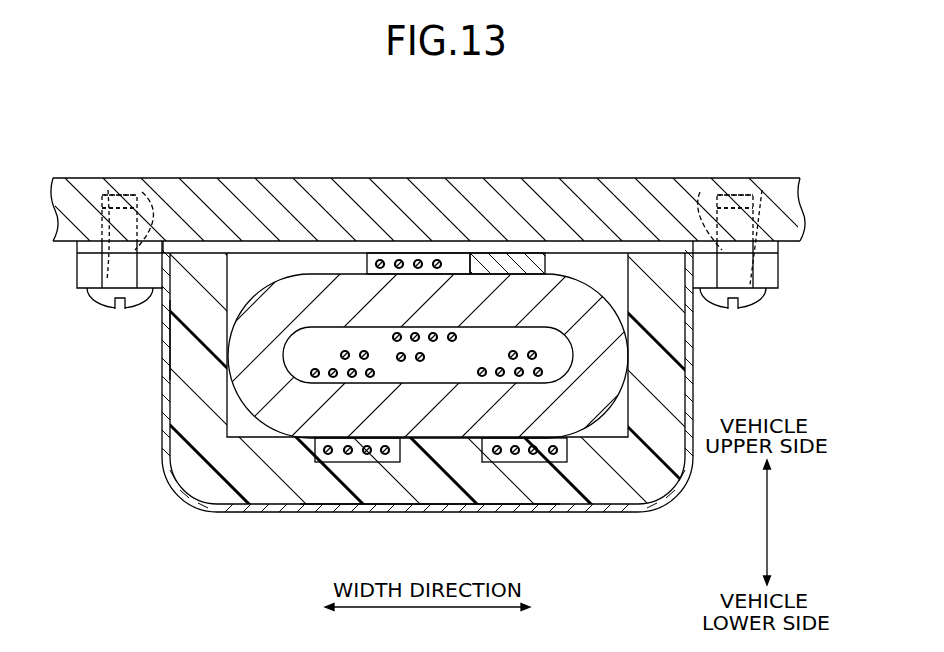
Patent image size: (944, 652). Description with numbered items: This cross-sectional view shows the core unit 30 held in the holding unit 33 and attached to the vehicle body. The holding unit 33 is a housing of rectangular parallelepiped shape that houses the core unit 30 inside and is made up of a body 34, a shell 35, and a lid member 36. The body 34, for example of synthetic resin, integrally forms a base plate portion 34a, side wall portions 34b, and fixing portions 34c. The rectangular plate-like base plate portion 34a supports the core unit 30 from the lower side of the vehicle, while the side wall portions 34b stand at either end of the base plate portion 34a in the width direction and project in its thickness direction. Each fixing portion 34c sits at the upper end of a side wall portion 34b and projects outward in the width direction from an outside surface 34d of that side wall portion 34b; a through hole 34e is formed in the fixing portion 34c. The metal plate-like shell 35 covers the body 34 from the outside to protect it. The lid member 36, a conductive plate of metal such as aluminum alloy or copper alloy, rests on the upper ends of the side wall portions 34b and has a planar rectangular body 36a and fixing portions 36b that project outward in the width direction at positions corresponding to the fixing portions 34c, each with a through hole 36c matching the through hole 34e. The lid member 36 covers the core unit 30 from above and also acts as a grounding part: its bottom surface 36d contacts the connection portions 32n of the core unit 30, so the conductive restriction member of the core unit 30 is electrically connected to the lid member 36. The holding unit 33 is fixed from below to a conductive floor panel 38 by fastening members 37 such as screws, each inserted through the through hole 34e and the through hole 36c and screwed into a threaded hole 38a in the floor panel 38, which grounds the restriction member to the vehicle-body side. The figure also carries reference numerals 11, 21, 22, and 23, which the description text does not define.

The wire harness 11 is at (571, 268).
The electric wires 21 is at (355, 392).
The electric wires 22 is at (426, 245).
The electric wires 23 is at (522, 393).
The core unit 30 is at (275, 265).
The connection portions 32n is at (339, 255).
The holding unit 33 is at (234, 135).
The body 34 is at (202, 244).
The base plate portion 34a is at (442, 505).
The side wall portion 34b is at (195, 407).
The fixing portion 34c is at (70, 268).
The outside surface 34d is at (163, 334).
The through hole 34e is at (108, 190).
The shell 35 is at (157, 448).
The lid member 36 is at (394, 229).
The body 36a is at (659, 231).
The fixing portion 36b is at (88, 228).
The through hole 36c is at (130, 200).
The bottom surface 36d is at (457, 257).
The fastening member 37 is at (86, 298).
The floor panel 38 is at (615, 177).
The threaded hole 38a is at (162, 188).